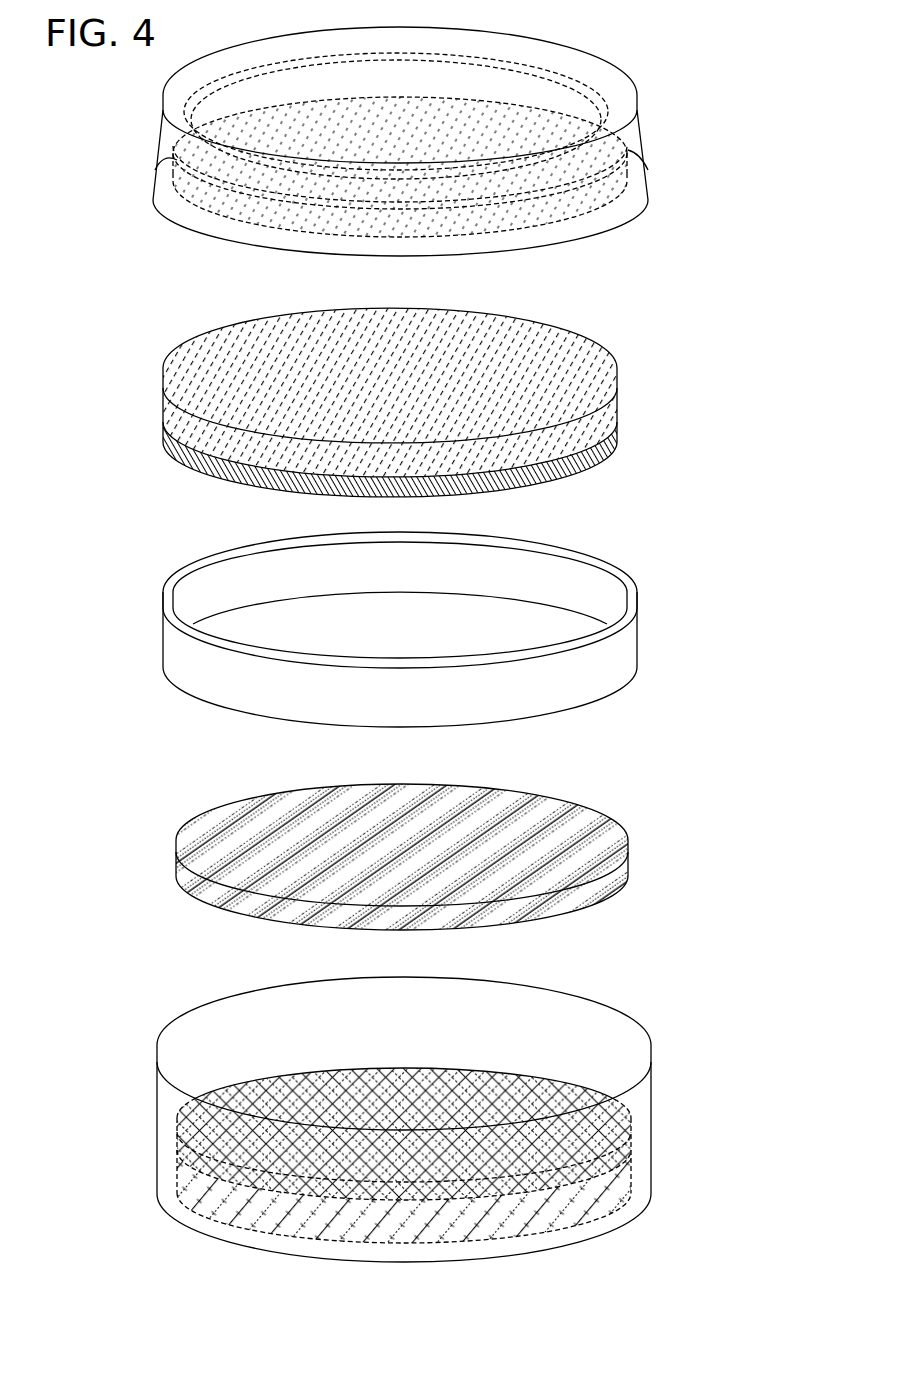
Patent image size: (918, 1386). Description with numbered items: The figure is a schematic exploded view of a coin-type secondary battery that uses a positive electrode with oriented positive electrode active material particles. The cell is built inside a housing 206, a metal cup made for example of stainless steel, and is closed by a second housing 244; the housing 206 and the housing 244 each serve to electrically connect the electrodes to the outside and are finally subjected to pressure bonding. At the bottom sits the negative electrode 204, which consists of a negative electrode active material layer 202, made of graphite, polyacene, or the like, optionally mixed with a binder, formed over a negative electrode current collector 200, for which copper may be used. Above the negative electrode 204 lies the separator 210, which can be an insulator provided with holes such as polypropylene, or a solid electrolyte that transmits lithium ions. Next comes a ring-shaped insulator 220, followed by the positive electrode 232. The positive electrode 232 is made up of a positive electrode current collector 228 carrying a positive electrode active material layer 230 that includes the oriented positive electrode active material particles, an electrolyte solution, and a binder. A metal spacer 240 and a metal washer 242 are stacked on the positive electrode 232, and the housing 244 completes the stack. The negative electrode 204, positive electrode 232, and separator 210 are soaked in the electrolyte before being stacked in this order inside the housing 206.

The negative electrode current collector 200 is at (651, 1193).
The negative electrode active material layer 202 is at (631, 1160).
The negative electrode 204 is at (481, 1155).
The housing 206 is at (651, 1105).
The separator 210 is at (176, 868).
The ring-shaped insulator 220 is at (637, 637).
The positive electrode current collector 228 is at (617, 405).
The positive electrode active material layer 230 is at (617, 443).
The positive electrode 232 is at (471, 402).
The spacer 240 is at (193, 208).
The washer 242 is at (184, 133).
The housing 244 is at (637, 97).